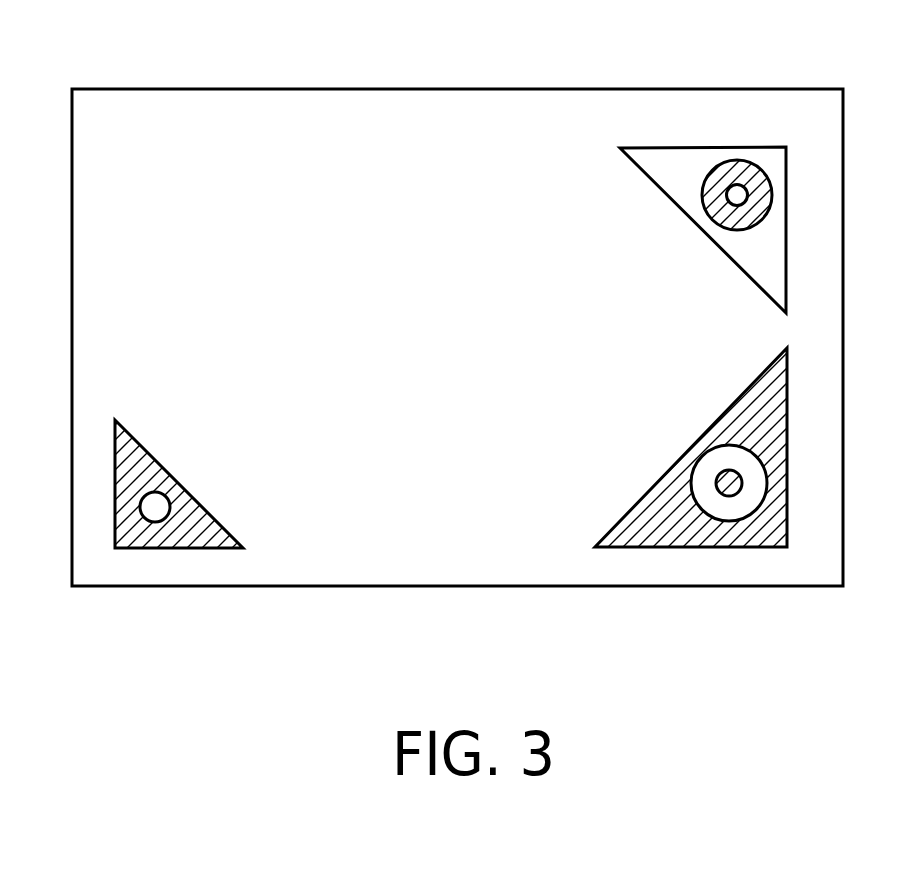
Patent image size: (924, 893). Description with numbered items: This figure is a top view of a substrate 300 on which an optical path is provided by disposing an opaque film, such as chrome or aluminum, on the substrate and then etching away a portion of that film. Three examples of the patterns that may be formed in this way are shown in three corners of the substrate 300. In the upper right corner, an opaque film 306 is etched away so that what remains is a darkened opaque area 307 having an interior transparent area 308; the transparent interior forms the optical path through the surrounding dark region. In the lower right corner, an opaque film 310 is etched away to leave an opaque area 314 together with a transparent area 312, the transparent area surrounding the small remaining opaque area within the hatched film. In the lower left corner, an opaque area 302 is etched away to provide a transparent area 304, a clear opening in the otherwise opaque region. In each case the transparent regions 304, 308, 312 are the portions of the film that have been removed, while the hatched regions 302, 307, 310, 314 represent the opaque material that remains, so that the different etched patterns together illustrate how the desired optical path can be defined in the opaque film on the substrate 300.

The printed circuit board / substrate 300 is at (815, 86).
The opaque area 302 is at (217, 552).
The transparent area 304 is at (167, 490).
The opaque film 306 is at (657, 153).
The darkened opaque area 307 is at (740, 160).
The interior transparent area 308 is at (727, 192).
The opaque film 310 is at (777, 372).
The transparent area 312 is at (692, 483).
The opaque area 314 is at (722, 478).